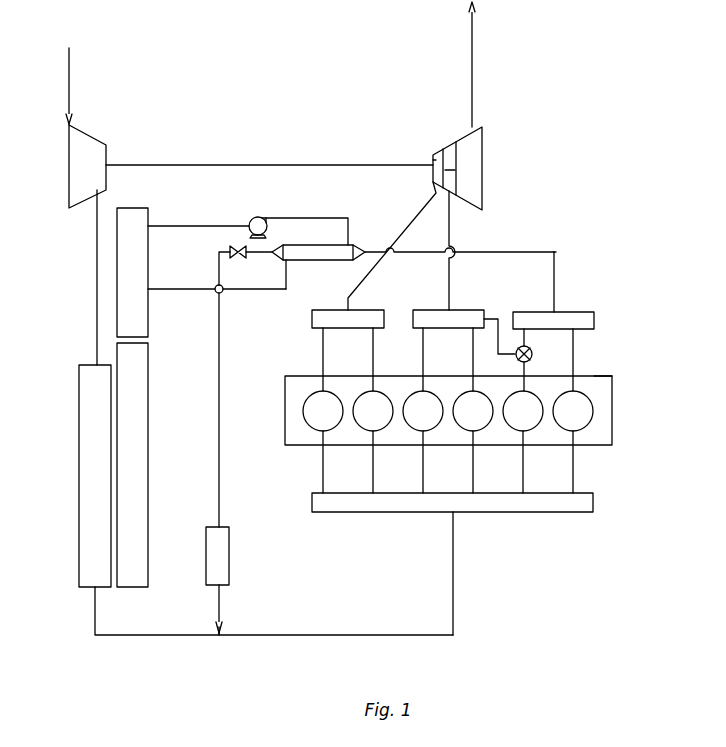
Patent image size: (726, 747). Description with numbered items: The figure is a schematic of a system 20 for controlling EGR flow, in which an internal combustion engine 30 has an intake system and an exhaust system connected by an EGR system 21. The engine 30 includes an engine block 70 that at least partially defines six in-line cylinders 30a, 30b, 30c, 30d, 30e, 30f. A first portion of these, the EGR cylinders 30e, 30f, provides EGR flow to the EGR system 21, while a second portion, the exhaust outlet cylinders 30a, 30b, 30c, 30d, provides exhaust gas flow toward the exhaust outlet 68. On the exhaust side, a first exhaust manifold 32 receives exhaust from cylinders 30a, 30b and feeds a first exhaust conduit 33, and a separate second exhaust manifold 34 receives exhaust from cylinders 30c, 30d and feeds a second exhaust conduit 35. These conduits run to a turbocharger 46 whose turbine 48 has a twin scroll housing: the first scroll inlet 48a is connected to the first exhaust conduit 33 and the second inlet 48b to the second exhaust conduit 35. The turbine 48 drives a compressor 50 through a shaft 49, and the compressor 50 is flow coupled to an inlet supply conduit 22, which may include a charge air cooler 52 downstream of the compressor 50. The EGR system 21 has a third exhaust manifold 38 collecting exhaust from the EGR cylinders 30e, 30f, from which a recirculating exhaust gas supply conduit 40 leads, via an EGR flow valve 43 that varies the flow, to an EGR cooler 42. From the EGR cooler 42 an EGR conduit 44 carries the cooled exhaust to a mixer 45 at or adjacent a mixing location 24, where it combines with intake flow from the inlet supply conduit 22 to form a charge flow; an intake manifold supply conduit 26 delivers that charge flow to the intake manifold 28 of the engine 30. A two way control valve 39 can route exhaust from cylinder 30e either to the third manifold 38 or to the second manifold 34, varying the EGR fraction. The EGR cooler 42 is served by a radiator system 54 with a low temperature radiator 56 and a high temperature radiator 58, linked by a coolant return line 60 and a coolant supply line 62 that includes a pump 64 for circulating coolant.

The system 20 is at (433, 469).
The EGR system 21 is at (570, 226).
The inlet supply conduit 22 is at (117, 636).
The mixing location 24 is at (219, 637).
The intake manifold supply conduit 26 is at (453, 590).
The intake manifold 28 is at (537, 512).
The internal combustion engine 30 is at (424, 410).
The cylinder 30a is at (328, 402).
The cylinder 30b is at (370, 420).
The cylinder 30c is at (418, 402).
The cylinder 30d is at (468, 420).
The EGR cylinder 30e is at (518, 420).
The EGR cylinder 30f is at (567, 420).
The first exhaust manifold 32 is at (325, 310).
The first exhaust conduit 33 is at (400, 245).
The second exhaust manifold 34 is at (415, 310).
The second exhaust conduit 35 is at (451, 240).
The third exhaust manifold 38 is at (594, 320).
The two way control valve 39 is at (518, 346).
The recirculating exhaust gas supply conduit 40 is at (554, 277).
The EGR cooler 42 is at (357, 243).
The EGR flow valve 43 is at (238, 260).
The EGR conduit 44 is at (219, 503).
The mixer 45 is at (229, 557).
The turbocharger 46 is at (303, 183).
The turbine 48 is at (482, 140).
The inlet 48a is at (433, 157).
The second inlet 48b is at (460, 170).
The shaft 49 is at (173, 165).
The compressor 50 is at (86, 206).
The charge air cooler 52 is at (79, 438).
The radiator system 54 is at (161, 397).
The low temperature radiator 56 is at (148, 264).
The high temperature radiator 58 is at (148, 442).
The coolant return line 60 is at (255, 289).
The coolant supply line 62 is at (175, 226).
The pump 64 is at (266, 215).
The exhaust outlet 68 is at (472, 48).
The engine block 70 is at (593, 376).